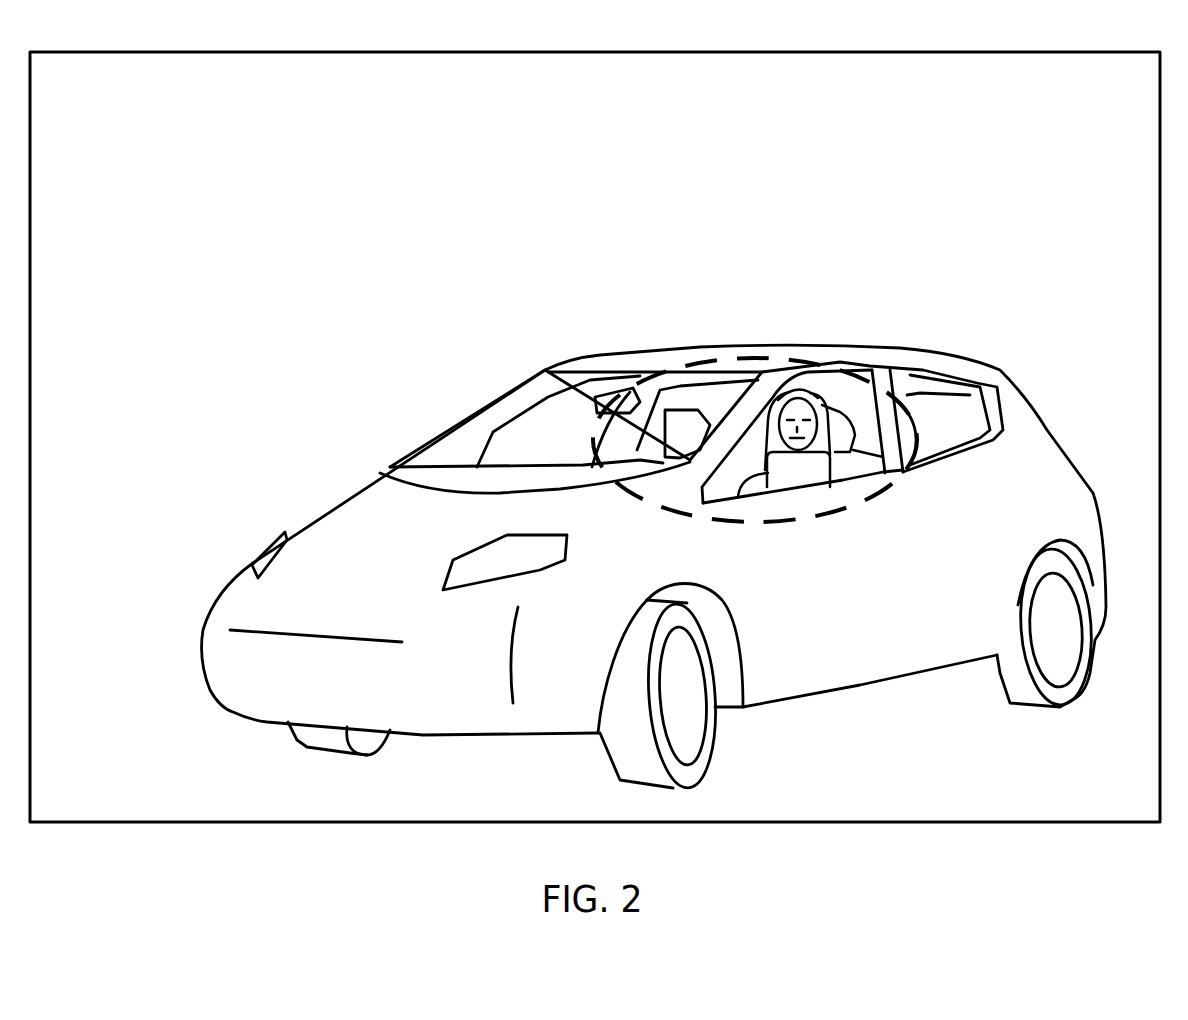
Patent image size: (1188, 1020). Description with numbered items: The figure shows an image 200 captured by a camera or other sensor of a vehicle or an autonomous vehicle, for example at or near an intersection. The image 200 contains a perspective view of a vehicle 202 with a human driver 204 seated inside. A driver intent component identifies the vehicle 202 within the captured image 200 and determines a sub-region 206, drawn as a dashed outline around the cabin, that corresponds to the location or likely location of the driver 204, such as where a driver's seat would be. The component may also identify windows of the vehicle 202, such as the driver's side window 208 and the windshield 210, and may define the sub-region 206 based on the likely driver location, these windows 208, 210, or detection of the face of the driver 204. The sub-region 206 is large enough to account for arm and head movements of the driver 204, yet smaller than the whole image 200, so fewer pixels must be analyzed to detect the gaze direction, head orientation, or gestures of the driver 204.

The image 200 is at (148, 50).
The vehicle 202 is at (305, 515).
The driver 204 is at (800, 392).
The sub-region 206 is at (683, 367).
The driver's side window 208 is at (853, 477).
The windshield 210 is at (467, 427).